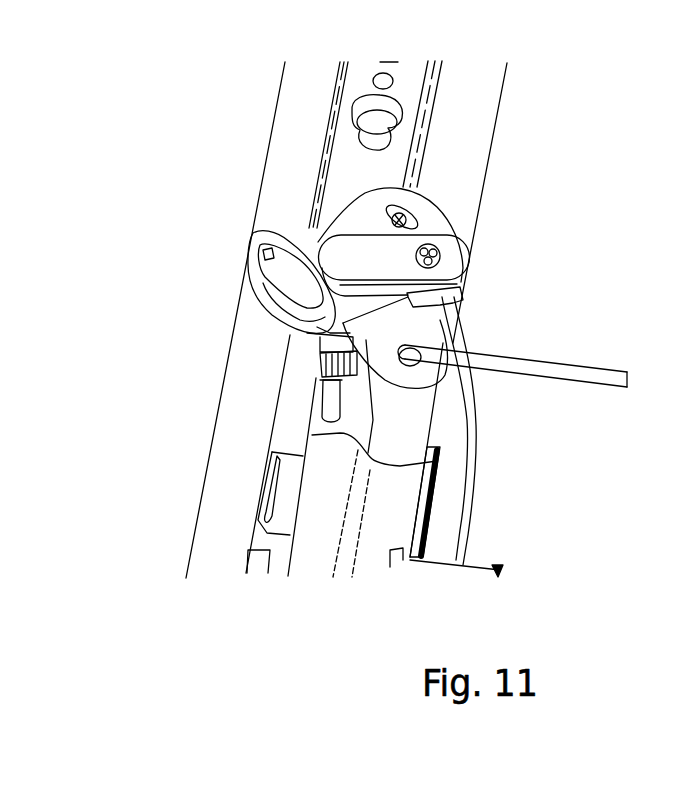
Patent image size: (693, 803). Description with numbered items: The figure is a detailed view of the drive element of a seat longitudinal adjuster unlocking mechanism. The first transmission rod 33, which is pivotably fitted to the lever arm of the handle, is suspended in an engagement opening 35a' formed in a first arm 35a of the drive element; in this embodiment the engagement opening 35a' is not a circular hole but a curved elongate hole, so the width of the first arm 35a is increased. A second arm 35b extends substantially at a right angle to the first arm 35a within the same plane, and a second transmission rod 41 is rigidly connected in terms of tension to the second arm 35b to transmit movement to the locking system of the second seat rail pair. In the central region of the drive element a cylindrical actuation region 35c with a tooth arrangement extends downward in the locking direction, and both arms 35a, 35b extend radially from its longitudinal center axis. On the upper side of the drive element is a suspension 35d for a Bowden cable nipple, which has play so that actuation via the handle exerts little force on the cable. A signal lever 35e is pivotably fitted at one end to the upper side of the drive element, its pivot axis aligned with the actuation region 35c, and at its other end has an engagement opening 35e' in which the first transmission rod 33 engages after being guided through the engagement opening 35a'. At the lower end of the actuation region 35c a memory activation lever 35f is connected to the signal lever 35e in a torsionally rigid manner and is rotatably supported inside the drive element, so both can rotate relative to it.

The first transmission rod 33 is at (465, 473).
The first arm 35a is at (456, 225).
The engagement opening 35a' is at (491, 158).
The second arm 35b is at (422, 378).
The actuation region 35c is at (320, 362).
The suspension 35d is at (273, 285).
The signal lever 35e is at (433, 279).
The engagement opening 35e' is at (483, 257).
The memory activation lever 35f is at (330, 397).
The second transmission rod 41 is at (604, 371).